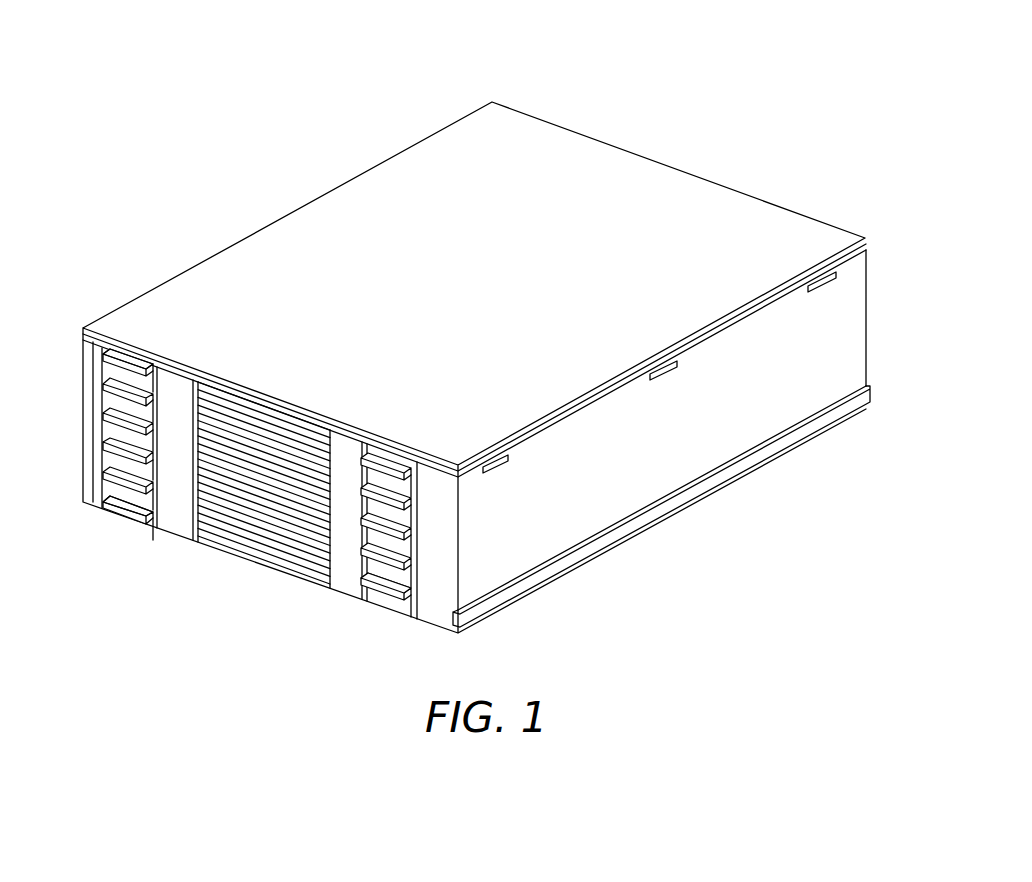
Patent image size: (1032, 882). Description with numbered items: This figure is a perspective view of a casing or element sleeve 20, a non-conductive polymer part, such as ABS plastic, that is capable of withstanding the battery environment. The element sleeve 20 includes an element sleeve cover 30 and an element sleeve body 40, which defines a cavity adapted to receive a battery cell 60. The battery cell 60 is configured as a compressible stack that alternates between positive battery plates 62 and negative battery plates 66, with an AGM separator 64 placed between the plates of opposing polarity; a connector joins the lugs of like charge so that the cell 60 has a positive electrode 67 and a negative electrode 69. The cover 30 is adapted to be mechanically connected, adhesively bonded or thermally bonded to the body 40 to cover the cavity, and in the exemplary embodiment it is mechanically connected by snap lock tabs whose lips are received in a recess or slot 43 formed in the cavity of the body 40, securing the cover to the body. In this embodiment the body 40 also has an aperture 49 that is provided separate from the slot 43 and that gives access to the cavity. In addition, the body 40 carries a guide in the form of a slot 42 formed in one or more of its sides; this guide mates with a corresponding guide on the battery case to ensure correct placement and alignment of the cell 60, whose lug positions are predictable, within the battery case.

The element sleeve 20 is at (438, 80).
The element sleeve cover 30 is at (600, 157).
The element sleeve body 40 is at (843, 333).
The slot 42 is at (811, 421).
The slot 43 is at (827, 283).
The aperture 49 is at (188, 519).
The battery cell 60 is at (248, 604).
The positive battery plate 62 is at (412, 477).
The AGM separator 64 is at (139, 501).
The negative battery plate 66 is at (100, 357).
The positive electrode 67 is at (131, 356).
The negative electrode 69 is at (386, 457).